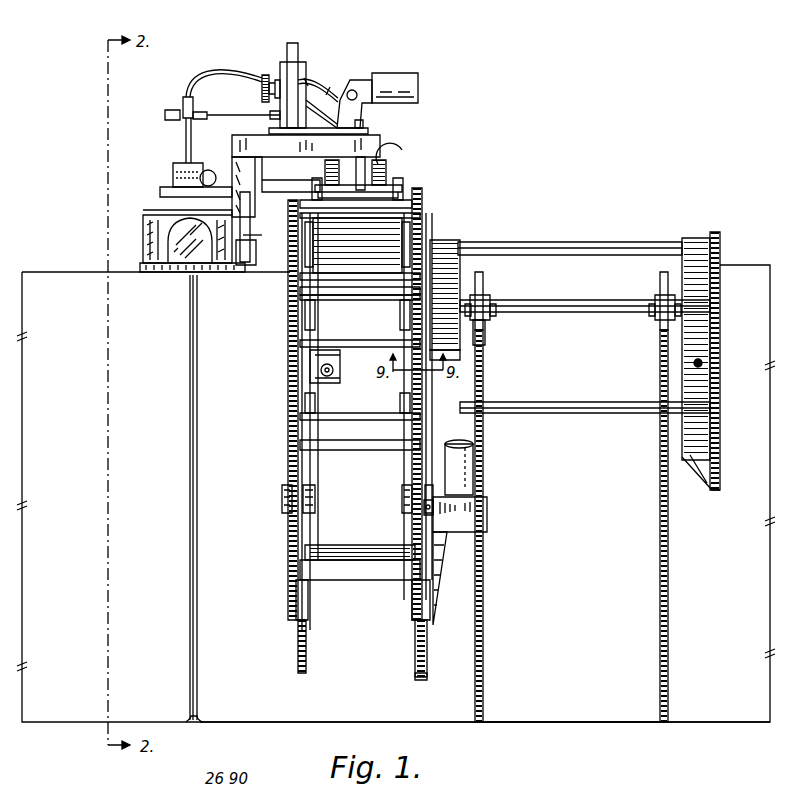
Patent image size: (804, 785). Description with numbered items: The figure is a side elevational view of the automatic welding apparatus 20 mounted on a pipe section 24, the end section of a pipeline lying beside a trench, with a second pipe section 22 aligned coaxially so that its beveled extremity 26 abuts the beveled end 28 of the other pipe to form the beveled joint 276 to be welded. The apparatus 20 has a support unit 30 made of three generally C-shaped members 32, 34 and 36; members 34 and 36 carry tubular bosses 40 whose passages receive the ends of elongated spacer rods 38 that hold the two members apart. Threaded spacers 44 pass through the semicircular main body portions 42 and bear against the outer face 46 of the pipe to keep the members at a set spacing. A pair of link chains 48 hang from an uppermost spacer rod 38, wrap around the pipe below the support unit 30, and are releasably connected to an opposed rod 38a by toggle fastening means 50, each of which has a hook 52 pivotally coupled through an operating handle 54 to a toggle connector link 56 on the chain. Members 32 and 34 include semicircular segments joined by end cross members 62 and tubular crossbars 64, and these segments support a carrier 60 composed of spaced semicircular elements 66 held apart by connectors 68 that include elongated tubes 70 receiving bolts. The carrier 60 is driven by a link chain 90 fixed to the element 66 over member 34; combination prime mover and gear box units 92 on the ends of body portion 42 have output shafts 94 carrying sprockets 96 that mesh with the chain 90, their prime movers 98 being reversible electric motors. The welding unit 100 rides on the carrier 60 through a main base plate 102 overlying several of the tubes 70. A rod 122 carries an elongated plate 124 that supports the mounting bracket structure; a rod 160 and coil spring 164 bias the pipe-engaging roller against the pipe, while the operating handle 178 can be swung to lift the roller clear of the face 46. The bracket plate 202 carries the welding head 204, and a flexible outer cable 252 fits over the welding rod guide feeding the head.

The welding apparatus 20 is at (414, 66).
The pipe section 22 is at (42, 730).
The pipe section 24 is at (287, 730).
The beveled extremity 26 is at (189, 468).
The column tube 28 is at (198, 455).
The support unit 30 is at (555, 222).
The C-shaped member 32 is at (286, 540).
The C-shaped member 34 is at (427, 677).
The C-shaped member 36 is at (710, 500).
The spacer rod 38 is at (534, 404).
The opposed rod 38a is at (552, 304).
The tubular boss 40 is at (450, 322).
The main body portion 42 is at (458, 290).
The threaded spacer 44 is at (702, 364).
The outer face 46 is at (555, 720).
The link chain 48 is at (485, 604).
The fastening means 50 is at (486, 278).
The hook 52 is at (494, 316).
The operating handle 54 is at (490, 300).
The toggle connector link 56 is at (485, 330).
The carrier 60 is at (428, 182).
The end cross member 62 is at (338, 551).
The crossbar 64 is at (340, 344).
The semicircular element 66 is at (289, 292).
The connector 68 is at (338, 300).
The elongated tube 70 is at (372, 295).
The link chain 90 is at (416, 636).
The combination prime mover and gear box unit 92 is at (496, 487).
The output shaft 94 is at (436, 540).
The sprocket 96 is at (422, 518).
The prime mover 98 is at (475, 452).
The welding unit 100 is at (288, 38).
The main base plate 102 is at (418, 236).
The rod 122 is at (234, 222).
The elongated plate 124 is at (262, 178).
The rod 160 is at (392, 166).
The coil spring 164 is at (385, 160).
The operating handle 178 is at (370, 162).
The bracket plate 202 is at (155, 196).
The welding head 204 is at (183, 152).
The flexible outer cable 252 is at (186, 96).
The beveled joint 276 is at (197, 724).